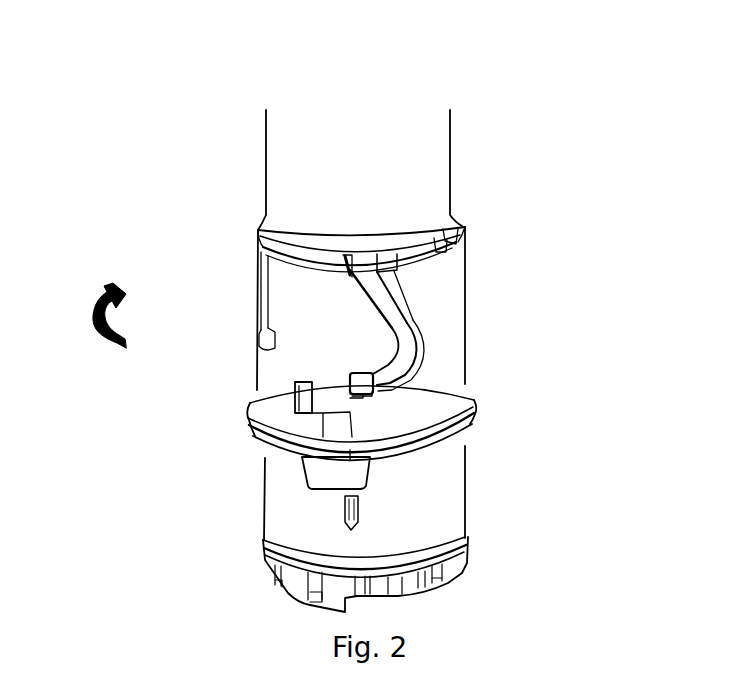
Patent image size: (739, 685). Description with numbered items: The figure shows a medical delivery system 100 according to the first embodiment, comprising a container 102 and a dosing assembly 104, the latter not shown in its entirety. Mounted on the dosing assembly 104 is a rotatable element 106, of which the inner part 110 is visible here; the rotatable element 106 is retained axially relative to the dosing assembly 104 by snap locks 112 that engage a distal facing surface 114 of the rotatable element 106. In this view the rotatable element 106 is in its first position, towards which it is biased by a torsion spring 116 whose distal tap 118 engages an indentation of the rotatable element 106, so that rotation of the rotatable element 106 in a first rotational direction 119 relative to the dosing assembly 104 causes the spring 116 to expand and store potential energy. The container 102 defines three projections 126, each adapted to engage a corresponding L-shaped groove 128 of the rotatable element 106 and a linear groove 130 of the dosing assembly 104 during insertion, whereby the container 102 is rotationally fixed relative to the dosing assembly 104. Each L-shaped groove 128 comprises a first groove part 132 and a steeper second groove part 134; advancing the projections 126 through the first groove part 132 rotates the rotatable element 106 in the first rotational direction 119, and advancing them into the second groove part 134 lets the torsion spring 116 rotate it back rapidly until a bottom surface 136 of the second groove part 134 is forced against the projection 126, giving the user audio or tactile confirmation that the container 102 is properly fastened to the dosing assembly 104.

The medical delivery system 100 is at (615, 327).
The container 102 is at (360, 170).
The dosing assembly 104 is at (365, 529).
The rotatable element 106 is at (459, 296).
The inner part 110 is at (450, 277).
The snap locks 112 is at (446, 236).
The distal facing surface 114 is at (443, 254).
The torsion spring 116 is at (433, 412).
The distal tap 118 is at (305, 395).
The first rotational direction 119 is at (100, 337).
The projections 126 is at (363, 380).
The L-shaped grooves 128 is at (499, 334).
The linear grooves 130 is at (360, 266).
The first groove part 132 is at (387, 310).
The second groove part 134 is at (383, 377).
The bottom surface 136 is at (350, 385).